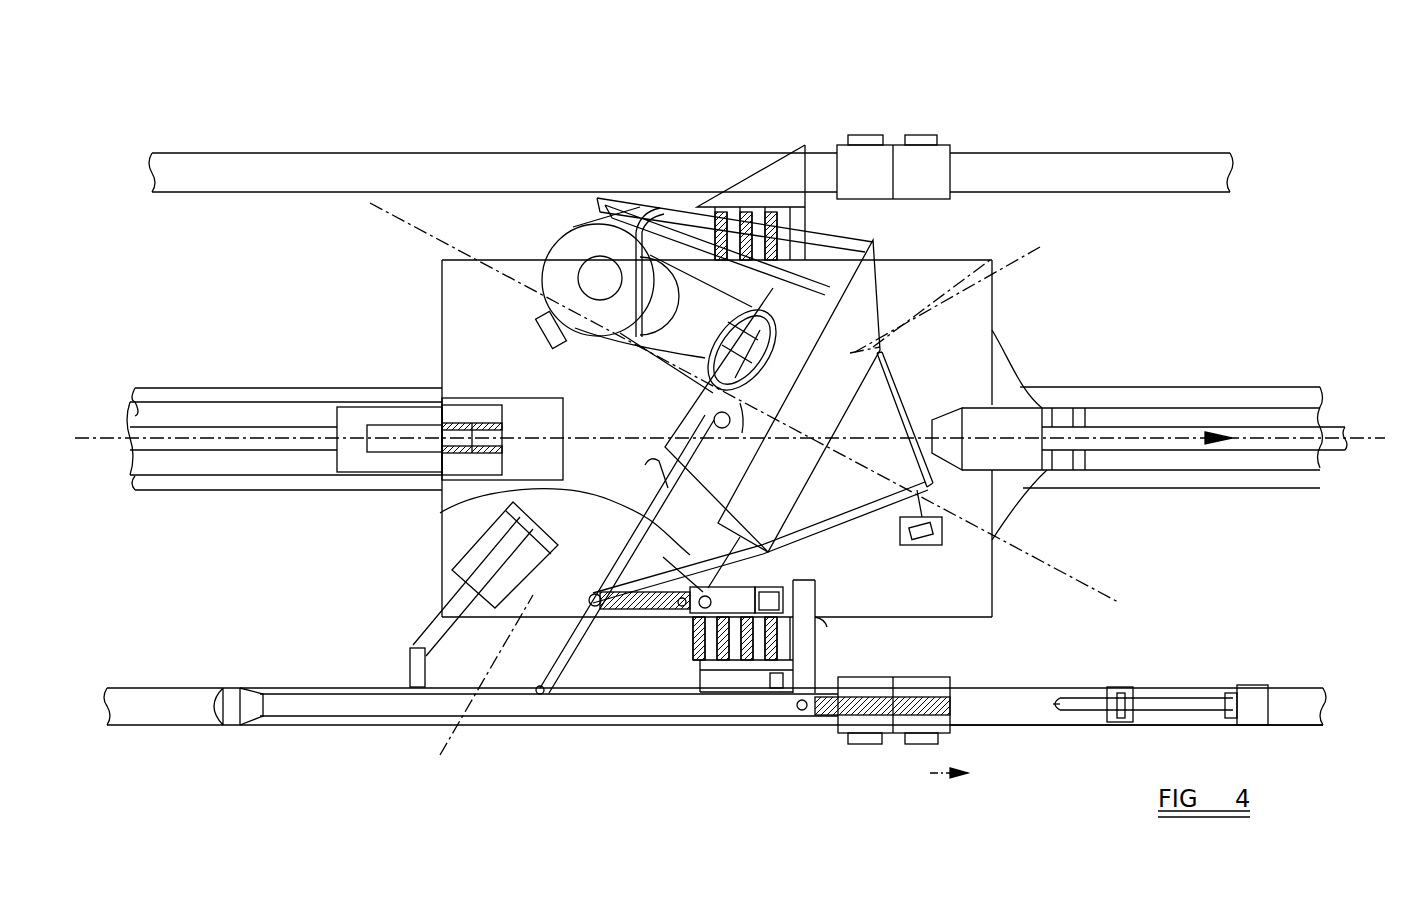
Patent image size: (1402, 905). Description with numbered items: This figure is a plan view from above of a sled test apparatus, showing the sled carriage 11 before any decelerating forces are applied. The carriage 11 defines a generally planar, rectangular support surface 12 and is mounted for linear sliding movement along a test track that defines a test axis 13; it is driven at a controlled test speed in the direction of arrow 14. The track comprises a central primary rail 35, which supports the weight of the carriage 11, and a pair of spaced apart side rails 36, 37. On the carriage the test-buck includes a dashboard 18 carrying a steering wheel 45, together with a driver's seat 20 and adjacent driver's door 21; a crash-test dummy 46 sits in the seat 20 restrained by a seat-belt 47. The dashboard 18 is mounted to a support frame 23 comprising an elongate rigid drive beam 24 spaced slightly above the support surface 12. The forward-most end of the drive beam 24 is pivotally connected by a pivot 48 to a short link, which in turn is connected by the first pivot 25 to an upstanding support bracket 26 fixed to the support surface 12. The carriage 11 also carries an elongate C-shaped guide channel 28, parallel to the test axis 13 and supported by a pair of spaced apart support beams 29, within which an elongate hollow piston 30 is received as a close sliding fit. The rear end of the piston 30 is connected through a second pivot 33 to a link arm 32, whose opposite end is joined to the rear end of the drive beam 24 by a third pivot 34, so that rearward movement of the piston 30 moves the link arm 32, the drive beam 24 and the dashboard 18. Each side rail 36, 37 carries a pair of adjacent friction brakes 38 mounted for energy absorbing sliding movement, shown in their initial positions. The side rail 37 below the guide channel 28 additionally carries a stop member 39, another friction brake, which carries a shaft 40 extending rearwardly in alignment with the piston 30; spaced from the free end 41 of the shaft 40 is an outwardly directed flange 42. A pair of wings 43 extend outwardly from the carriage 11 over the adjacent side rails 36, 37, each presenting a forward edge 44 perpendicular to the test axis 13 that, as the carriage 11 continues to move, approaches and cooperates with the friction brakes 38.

The sled carriage 11 is at (442, 327).
The support surface 12 is at (440, 268).
The test axis 13 is at (1333, 452).
The arrow 14 is at (1156, 430).
The dashboard 18 is at (850, 330).
The driver's seat 20 is at (630, 380).
The driver's door 21 is at (667, 212).
The support frame 23 is at (520, 482).
The drive beam 24 is at (600, 615).
The first pivot 25 is at (705, 615).
The support bracket 26 is at (768, 615).
The guide channel 28 is at (383, 728).
The support beams 29 is at (428, 635).
The piston 30 is at (833, 700).
The link arm 32 is at (555, 625).
The second pivot 33 is at (540, 694).
The third pivot 34 is at (486, 691).
The primary rail 35 is at (1232, 490).
The side rail 36 is at (1165, 150).
The side rail 37 is at (1028, 727).
The friction brakes 38 is at (910, 160).
The stop member 39 is at (1250, 688).
The shaft 40 is at (1168, 693).
The free end 41 is at (1052, 710).
The flange 42 is at (1120, 690).
The wings 43 is at (780, 185).
The forward edge 44 is at (810, 172).
The steering wheel 45 is at (1040, 247).
The crash-test dummy 46 is at (645, 215).
The seat-belt 47 is at (597, 208).
The pivot 48 is at (680, 608).